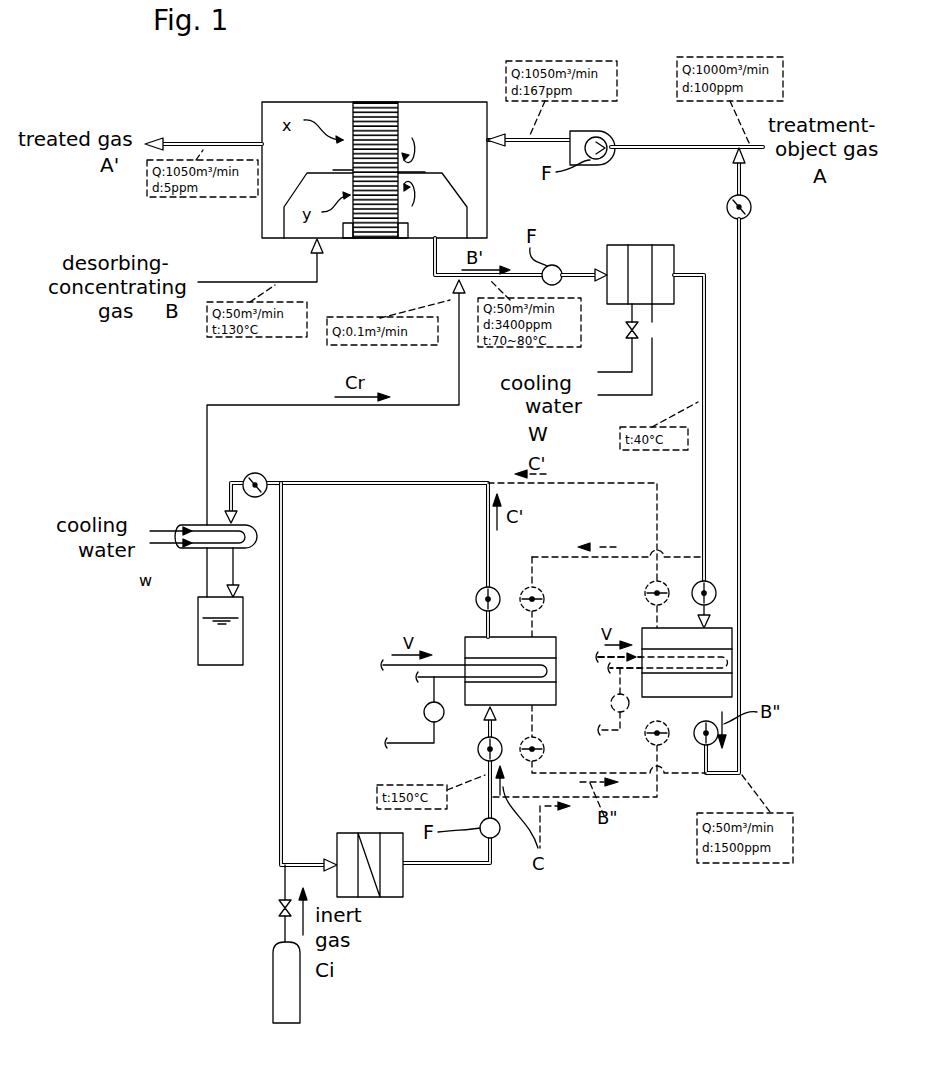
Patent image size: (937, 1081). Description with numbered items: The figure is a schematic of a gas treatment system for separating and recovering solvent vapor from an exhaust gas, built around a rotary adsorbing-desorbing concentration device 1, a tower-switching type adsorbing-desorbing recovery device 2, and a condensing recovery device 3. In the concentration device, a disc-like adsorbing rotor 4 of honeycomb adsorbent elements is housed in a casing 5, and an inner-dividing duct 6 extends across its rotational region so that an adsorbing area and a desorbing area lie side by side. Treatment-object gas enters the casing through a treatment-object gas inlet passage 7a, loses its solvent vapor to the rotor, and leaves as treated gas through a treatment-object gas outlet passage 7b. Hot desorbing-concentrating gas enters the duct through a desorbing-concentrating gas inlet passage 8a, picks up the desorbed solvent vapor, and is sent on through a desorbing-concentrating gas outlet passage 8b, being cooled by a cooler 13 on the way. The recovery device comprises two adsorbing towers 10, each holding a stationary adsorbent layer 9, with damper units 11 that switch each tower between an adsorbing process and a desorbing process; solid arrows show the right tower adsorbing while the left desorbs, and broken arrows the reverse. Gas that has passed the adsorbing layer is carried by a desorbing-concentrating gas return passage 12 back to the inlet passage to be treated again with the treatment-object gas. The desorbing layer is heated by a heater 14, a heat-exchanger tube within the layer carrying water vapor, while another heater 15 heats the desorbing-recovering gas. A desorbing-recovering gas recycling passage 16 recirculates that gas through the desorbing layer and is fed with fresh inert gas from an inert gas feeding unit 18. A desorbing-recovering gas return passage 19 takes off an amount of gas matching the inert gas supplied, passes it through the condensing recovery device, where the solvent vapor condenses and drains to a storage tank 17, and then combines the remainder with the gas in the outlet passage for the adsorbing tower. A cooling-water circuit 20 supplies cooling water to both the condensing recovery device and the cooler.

The rotary adsorbing-desorbing concentration device 1 is at (258, 99).
The tower-switching type adsorbing-desorbing recovery device 2 is at (672, 810).
The condensing recovery device 3 is at (203, 523).
The adsorbing rotor 4 is at (398, 145).
The casing 5 is at (432, 101).
The inner-dividing duct 6 is at (284, 194).
The treatment-object gas inlet passage 7a is at (748, 158).
The treatment-object gas outlet passage 7b is at (210, 143).
The desorbing-concentrating gas inlet passage 8a is at (278, 282).
The desorbing-concentrating gas outlet passage 8b is at (704, 330).
The adsorbent layer 9 is at (483, 660).
The adsorbing tower 10 is at (545, 637).
The damper unit 11 is at (524, 589).
The desorbing-concentrating gas return passage 12 is at (742, 452).
The cooler 13 is at (645, 245).
The heater 14 is at (532, 676).
The heater 15 is at (392, 898).
The desorbing-recovering gas recycling passage 16 is at (280, 666).
The storage tank 17 is at (198, 650).
The inert gas feeding unit 18 is at (300, 1007).
The desorbing-recovering gas return passage 19 is at (305, 406).
The cooling-water circuit 20 is at (605, 373).